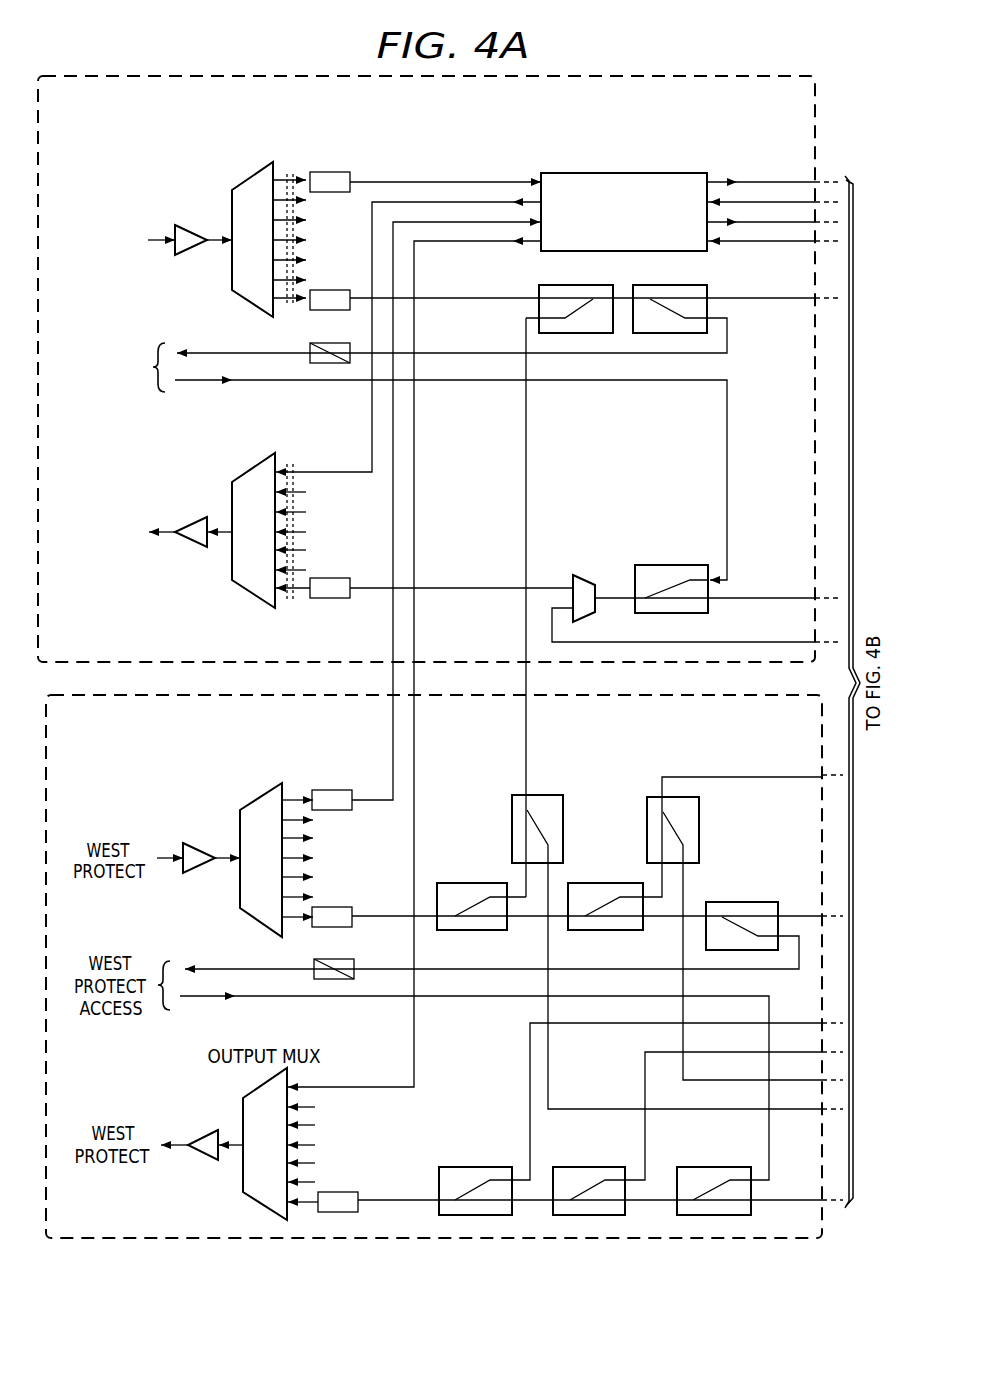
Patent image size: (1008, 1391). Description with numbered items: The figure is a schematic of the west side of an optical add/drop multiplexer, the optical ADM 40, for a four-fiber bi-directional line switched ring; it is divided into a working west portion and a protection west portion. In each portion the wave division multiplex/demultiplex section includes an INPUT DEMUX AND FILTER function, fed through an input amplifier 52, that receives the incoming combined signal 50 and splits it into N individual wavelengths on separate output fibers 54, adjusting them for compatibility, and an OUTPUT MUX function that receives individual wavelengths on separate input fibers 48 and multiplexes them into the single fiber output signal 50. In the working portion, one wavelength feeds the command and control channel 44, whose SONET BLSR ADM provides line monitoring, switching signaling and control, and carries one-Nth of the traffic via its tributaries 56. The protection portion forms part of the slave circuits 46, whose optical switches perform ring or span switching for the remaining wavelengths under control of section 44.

The optical ADM 40 is at (285, 58).
The command and control channel 44 is at (684, 152).
The slave circuits 46 is at (457, 752).
The separate input fibers 48 is at (297, 594).
The single fiber output signal 50 is at (170, 530).
The input amplifier 52 is at (212, 243).
The separate output fibers 54 is at (286, 304).
The tributaries 56 is at (394, 463).